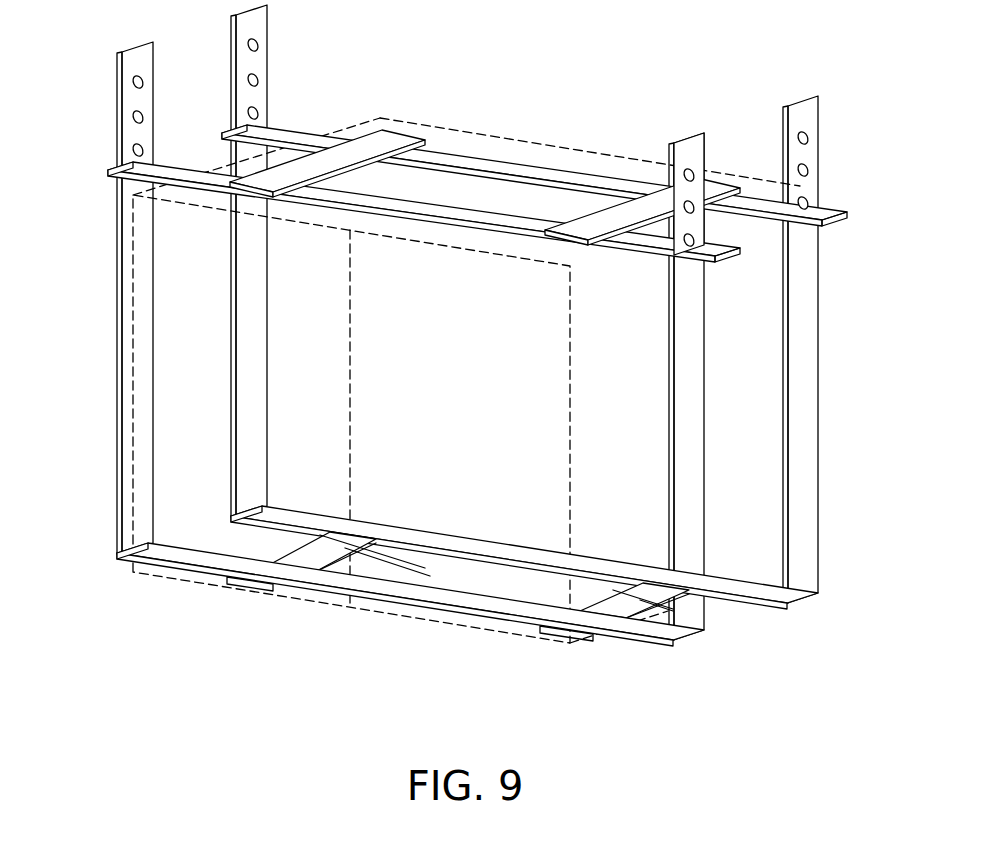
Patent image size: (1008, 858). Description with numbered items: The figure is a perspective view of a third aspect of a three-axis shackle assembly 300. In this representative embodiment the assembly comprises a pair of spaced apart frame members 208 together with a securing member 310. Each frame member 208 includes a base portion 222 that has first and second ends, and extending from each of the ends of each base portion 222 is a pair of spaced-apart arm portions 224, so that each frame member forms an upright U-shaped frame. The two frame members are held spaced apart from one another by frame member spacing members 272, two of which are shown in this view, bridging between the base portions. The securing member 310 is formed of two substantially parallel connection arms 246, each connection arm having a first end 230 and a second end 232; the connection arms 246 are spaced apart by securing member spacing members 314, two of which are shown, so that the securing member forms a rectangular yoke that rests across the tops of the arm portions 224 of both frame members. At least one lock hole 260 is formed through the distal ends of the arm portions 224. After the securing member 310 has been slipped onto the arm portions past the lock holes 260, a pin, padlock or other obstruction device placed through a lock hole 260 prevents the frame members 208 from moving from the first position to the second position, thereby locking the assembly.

The three-axis shackle assembly 300 is at (458, 353).
The frame member 208 is at (458, 353).
The base portion 222 is at (467, 552).
The arm portion 224 is at (252, 298).
The first end 230 is at (793, 223).
The second end 232 is at (173, 157).
The connection arm 246 is at (477, 189).
The lock hole 260 is at (142, 148).
The frame member spacing member 272 is at (320, 547).
The securing member 310 is at (315, 224).
The securing member spacing member 314 is at (384, 138).